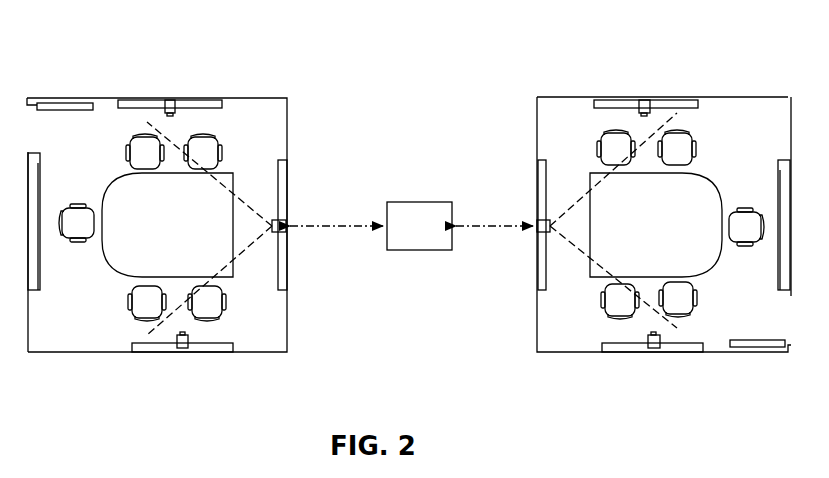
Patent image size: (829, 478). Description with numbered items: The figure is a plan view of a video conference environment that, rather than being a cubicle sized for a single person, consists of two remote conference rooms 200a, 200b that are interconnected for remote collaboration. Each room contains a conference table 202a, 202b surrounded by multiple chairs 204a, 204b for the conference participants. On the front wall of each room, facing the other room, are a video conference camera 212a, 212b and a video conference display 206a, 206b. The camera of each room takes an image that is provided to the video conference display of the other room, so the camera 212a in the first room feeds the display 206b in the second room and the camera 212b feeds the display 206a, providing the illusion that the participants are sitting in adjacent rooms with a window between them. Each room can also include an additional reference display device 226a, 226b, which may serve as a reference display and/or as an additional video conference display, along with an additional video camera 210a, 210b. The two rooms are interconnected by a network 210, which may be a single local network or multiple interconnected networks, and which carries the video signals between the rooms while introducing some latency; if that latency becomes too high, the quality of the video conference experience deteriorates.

The conference room 200a is at (105, 97).
The conference room 200b is at (535, 115).
The conference table 202a is at (198, 230).
The conference table 202b is at (678, 230).
The chair 204a is at (140, 295).
The chair 204b is at (689, 150).
The video conference display 206a is at (284, 268).
The video conference display 206b is at (537, 170).
The network 210 is at (436, 236).
The additional video camera 210a is at (172, 100).
The additional video camera 210b is at (644, 100).
The video conference camera 212a is at (287, 229).
The video conference camera 212b is at (538, 233).
The reference display device 226a is at (212, 100).
The reference display device 226b is at (613, 102).